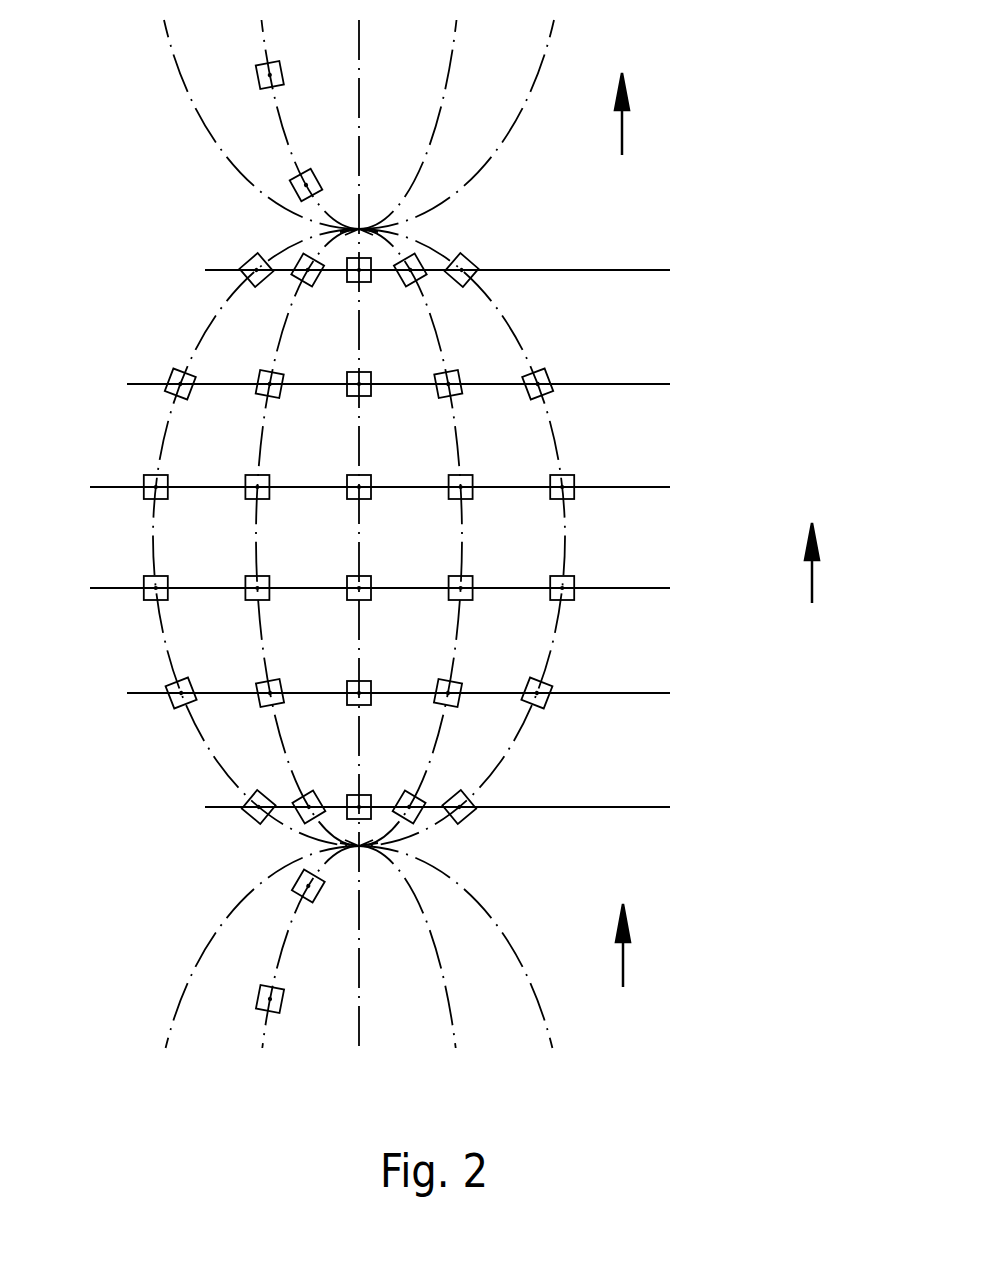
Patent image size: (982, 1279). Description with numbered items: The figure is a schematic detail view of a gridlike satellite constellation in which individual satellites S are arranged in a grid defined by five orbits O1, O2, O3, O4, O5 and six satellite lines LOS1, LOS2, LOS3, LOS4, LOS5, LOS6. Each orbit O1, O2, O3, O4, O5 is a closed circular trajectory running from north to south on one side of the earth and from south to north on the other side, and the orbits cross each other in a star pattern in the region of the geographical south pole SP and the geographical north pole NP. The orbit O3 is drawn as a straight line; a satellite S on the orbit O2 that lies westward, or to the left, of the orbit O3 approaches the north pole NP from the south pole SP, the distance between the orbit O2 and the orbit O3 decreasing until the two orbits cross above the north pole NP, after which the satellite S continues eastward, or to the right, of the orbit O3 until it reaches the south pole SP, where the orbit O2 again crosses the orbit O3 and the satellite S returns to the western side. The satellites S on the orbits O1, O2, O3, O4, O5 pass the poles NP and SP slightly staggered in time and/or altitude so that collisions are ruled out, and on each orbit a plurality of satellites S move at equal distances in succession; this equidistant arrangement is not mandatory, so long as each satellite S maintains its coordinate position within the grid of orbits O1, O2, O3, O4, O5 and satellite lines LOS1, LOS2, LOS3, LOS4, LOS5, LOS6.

The geographical north pole NP is at (350, 230).
The geographical south pole SP is at (350, 846).
The satellite S is at (470, 272).
The orbit O1 is at (167, 425).
The orbit O2 is at (257, 538).
The orbit O3 is at (359, 632).
The orbit O4 is at (440, 735).
The orbit O5 is at (552, 647).
The satellite line LOS1 is at (484, 811).
The satellite line LOS2 is at (445, 697).
The satellite line LOS3 is at (426, 592).
The satellite line LOS4 is at (426, 491).
The satellite line LOS5 is at (445, 388).
The satellite line LOS6 is at (484, 274).